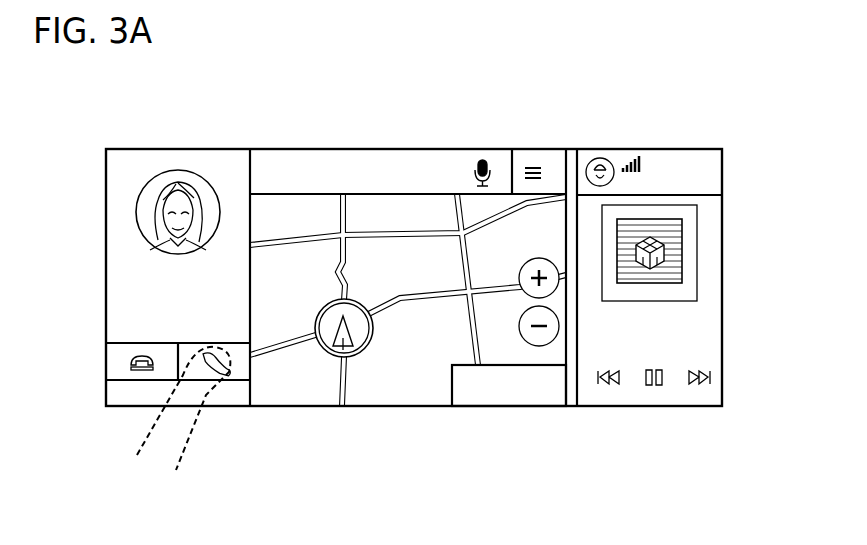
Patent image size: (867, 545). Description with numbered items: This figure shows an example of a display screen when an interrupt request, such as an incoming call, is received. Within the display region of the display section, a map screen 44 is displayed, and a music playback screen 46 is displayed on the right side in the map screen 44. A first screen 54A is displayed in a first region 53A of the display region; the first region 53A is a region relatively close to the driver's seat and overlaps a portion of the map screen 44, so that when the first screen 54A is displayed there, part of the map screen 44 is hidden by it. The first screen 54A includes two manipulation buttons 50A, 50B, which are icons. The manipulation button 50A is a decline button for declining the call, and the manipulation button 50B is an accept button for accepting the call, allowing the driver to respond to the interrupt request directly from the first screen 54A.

The map screen 44 is at (491, 147).
The music playback screen 46 is at (727, 216).
The first region 53A is at (151, 146).
The first screen 54A is at (217, 162).
The manipulation button 50A is at (122, 372).
The manipulation button 50B is at (243, 372).